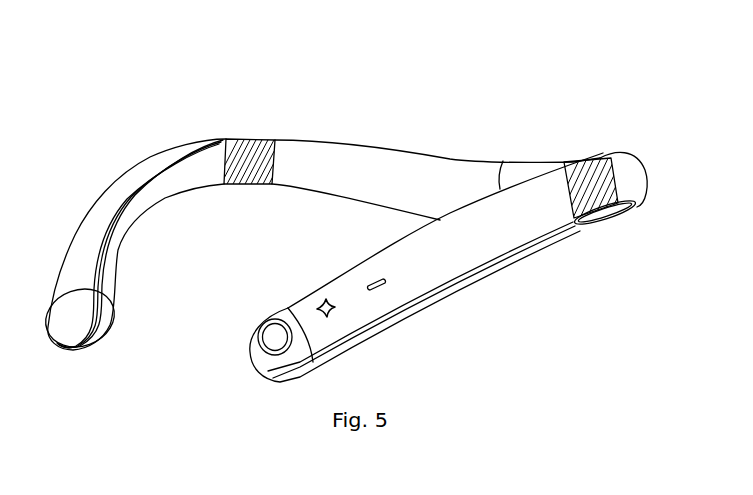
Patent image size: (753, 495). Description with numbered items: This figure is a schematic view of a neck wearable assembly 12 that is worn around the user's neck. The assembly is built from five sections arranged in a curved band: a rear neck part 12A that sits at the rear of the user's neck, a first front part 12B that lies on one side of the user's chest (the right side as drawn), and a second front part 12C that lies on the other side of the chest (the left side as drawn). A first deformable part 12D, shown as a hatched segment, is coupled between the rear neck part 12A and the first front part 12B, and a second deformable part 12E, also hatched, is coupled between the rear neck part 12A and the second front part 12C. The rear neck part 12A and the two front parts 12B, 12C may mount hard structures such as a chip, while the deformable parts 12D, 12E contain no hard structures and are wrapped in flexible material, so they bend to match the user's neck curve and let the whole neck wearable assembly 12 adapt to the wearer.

The neck wearable assembly 12 is at (137, 70).
The rear neck part 12A is at (387, 163).
The first front part 12B is at (97, 218).
The second front part 12C is at (430, 268).
The first deformable part 12D is at (255, 138).
The second deformable part 12E is at (593, 173).